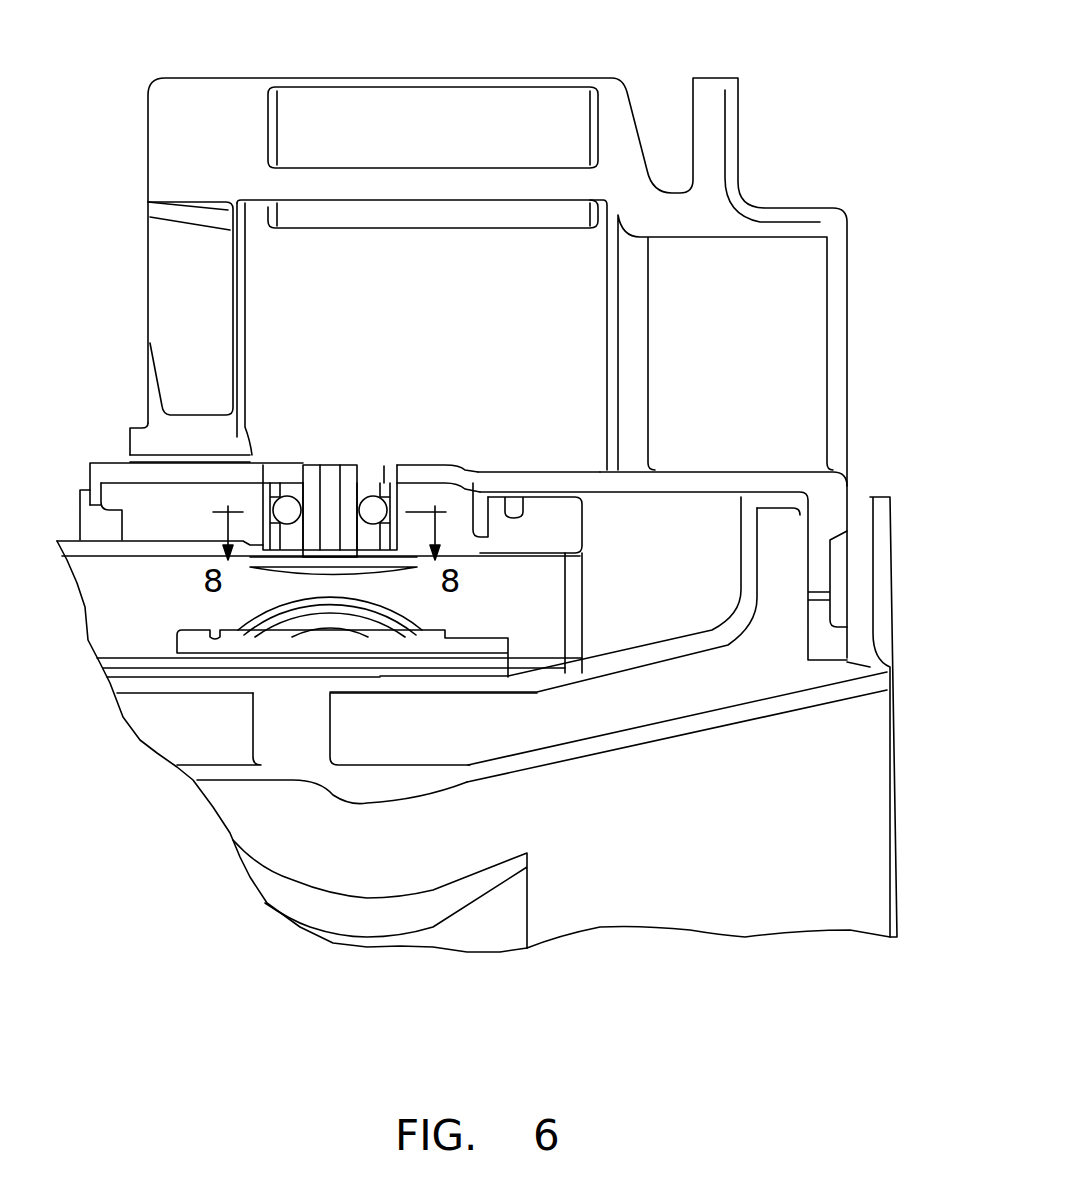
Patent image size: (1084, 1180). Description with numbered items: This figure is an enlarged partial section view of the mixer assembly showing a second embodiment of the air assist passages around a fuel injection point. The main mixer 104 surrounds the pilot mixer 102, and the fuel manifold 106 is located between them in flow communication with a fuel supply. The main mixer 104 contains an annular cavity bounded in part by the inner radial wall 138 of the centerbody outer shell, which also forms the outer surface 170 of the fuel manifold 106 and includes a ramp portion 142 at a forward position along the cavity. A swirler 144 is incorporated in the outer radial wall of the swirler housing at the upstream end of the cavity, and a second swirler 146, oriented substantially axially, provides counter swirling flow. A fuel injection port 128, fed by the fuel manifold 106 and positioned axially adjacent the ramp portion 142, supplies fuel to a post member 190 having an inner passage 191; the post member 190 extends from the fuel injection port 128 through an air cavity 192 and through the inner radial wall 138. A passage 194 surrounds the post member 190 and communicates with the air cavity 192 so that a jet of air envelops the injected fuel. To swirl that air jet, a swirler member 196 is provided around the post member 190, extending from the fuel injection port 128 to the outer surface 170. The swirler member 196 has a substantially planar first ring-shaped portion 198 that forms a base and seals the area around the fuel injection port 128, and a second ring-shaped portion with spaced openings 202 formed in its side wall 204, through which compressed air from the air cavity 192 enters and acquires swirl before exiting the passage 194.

The pilot mixer 102 is at (765, 805).
The main mixer 104 is at (862, 342).
The fuel manifold 106 is at (540, 617).
The fuel injection port 128 is at (352, 566).
The inner radial wall 138 is at (676, 478).
The ramp portion 142 is at (452, 480).
The swirler 144 is at (388, 62).
The second swirler 146 is at (160, 294).
The outer surface 170 is at (493, 472).
The post member 190 is at (352, 467).
The inner passage 191 is at (332, 477).
The air cavity 192 is at (145, 500).
The passage 194 is at (376, 472).
The swirler member 196 is at (250, 493).
The first ring-shaped portion 198 is at (250, 565).
The spaced openings 202 is at (386, 473).
The side wall 204 is at (236, 478).